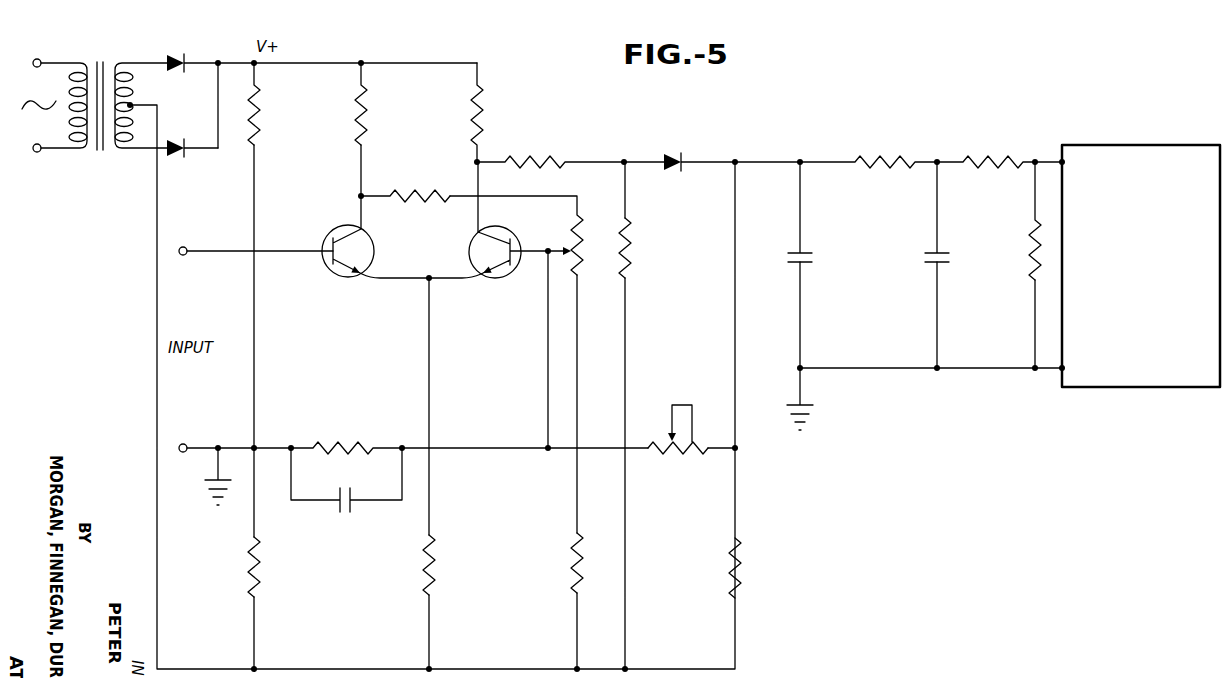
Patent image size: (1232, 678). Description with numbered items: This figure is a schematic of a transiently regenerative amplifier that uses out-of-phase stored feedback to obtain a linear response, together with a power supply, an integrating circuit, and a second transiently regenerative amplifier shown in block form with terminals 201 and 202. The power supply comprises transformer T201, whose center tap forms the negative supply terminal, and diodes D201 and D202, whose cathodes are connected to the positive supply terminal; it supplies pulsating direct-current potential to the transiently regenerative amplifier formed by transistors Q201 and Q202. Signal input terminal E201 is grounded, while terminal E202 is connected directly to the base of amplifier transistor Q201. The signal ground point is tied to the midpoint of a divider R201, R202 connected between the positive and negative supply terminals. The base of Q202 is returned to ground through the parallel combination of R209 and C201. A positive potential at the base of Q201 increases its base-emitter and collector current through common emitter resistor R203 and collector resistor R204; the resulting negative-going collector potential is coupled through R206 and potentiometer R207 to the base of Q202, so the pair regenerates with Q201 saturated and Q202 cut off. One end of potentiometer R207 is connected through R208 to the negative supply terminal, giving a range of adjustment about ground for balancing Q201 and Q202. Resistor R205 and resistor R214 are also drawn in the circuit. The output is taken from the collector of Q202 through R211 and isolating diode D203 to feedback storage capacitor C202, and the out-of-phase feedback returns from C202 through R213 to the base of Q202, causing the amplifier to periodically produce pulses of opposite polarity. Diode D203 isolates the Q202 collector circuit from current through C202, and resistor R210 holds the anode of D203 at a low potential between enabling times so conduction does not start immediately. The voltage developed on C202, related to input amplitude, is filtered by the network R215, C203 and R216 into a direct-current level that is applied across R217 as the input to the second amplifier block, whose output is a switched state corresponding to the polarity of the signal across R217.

The transformer T201 is at (94, 59).
The diode D201 is at (167, 57).
The diode D202 is at (172, 158).
The isolating diode D203 is at (669, 153).
The divider resistor R201 is at (262, 101).
The divider resistor R202 is at (246, 588).
The common emitter resistor R203 is at (420, 590).
The collector resistor R204 is at (354, 133).
The resistor R205 is at (485, 100).
The coupling resistor R206 is at (445, 184).
The potentiometer R207 is at (598, 197).
The resistor R208 is at (570, 563).
The base return resistor R209 is at (346, 435).
The resistor R210 is at (633, 236).
The output coupling resistor R211 is at (525, 160).
The feedback resistor R213 is at (655, 455).
The resistor R214 is at (743, 552).
The filter resistor R215 is at (864, 160).
The filter resistor R216 is at (974, 160).
The input resistor R217 is at (1026, 258).
The capacitor C201 is at (334, 510).
The feedback storage capacitor C202 is at (812, 248).
The filter capacitor C203 is at (946, 268).
The amplifier transistor Q201 is at (361, 237).
The amplifier transistor Q202 is at (500, 220).
The signal input terminal E201 is at (184, 438).
The signal input terminal E202 is at (184, 246).
The amplifier input terminal 201 is at (1062, 162).
The amplifier ground terminal 202 is at (1062, 368).